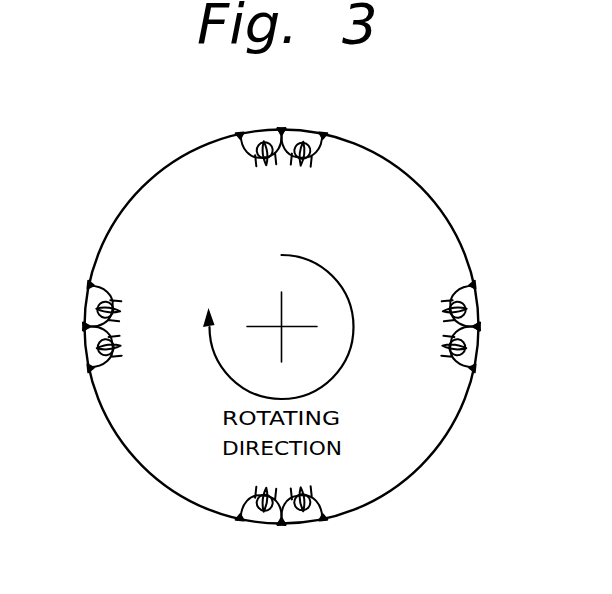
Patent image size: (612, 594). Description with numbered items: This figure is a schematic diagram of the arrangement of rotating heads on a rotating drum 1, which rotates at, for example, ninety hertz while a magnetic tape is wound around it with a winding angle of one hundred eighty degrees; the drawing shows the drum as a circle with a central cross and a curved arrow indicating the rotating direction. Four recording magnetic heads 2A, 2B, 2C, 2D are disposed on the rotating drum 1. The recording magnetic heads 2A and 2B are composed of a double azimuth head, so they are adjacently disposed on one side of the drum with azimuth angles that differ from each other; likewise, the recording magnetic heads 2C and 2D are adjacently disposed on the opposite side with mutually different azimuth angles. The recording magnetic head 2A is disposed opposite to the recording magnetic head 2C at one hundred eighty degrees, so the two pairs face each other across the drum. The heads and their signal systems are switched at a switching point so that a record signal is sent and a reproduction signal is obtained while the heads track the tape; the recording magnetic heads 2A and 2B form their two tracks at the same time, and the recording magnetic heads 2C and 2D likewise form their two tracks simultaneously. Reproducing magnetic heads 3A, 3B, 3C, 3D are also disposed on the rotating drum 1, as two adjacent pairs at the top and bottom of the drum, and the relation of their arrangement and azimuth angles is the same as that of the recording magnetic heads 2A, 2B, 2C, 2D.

The rotating drum 1 is at (437, 206).
The recording magnetic head 2A is at (473, 285).
The recording magnetic head 2B is at (473, 368).
The recording magnetic head 2C is at (90, 368).
The recording magnetic head 2D is at (90, 285).
The reproducing magnetic head 3A is at (323, 521).
The reproducing magnetic head 3B is at (241, 521).
The reproducing magnetic head 3C is at (240, 134).
The reproducing magnetic head 3D is at (323, 134).